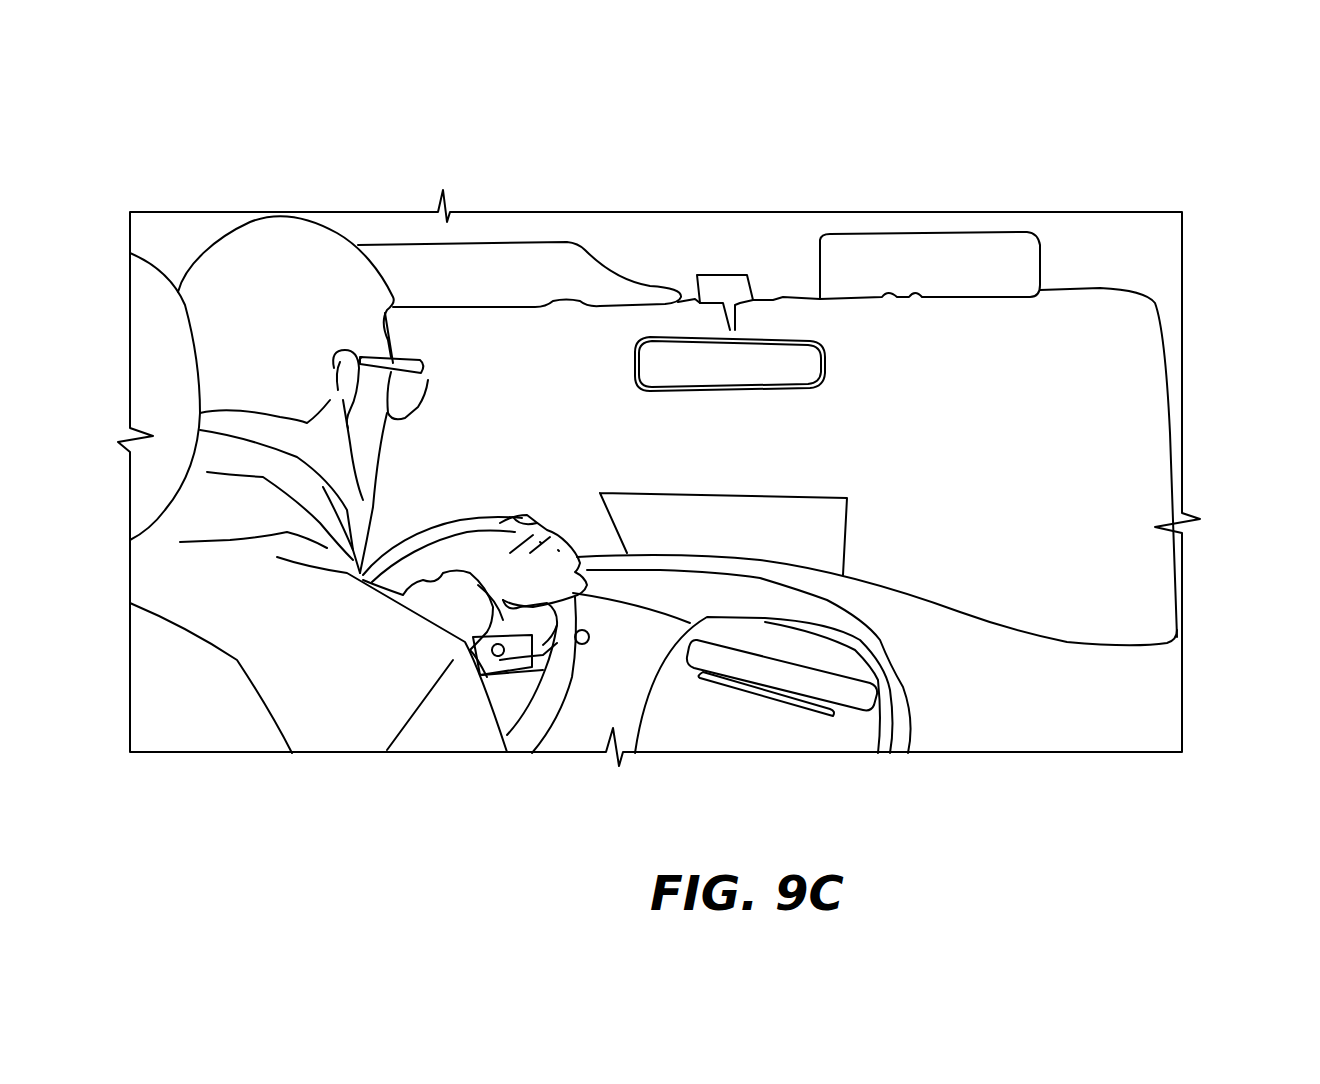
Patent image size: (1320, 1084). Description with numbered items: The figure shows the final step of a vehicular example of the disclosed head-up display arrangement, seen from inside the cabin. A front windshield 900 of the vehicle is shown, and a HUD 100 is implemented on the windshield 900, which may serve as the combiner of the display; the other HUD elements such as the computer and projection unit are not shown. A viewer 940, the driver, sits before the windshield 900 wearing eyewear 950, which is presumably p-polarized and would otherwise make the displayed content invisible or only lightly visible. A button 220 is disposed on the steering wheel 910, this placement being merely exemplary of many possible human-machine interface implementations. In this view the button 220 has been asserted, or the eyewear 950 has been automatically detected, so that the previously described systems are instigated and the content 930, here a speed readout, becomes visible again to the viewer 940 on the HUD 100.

The front windshield 900 is at (1153, 420).
The viewer 940 is at (358, 484).
The eyewear 950 is at (423, 393).
The steering wheel 910 is at (482, 518).
The HUD 100 is at (605, 493).
The content 930 is at (758, 527).
The button 220 is at (577, 650).